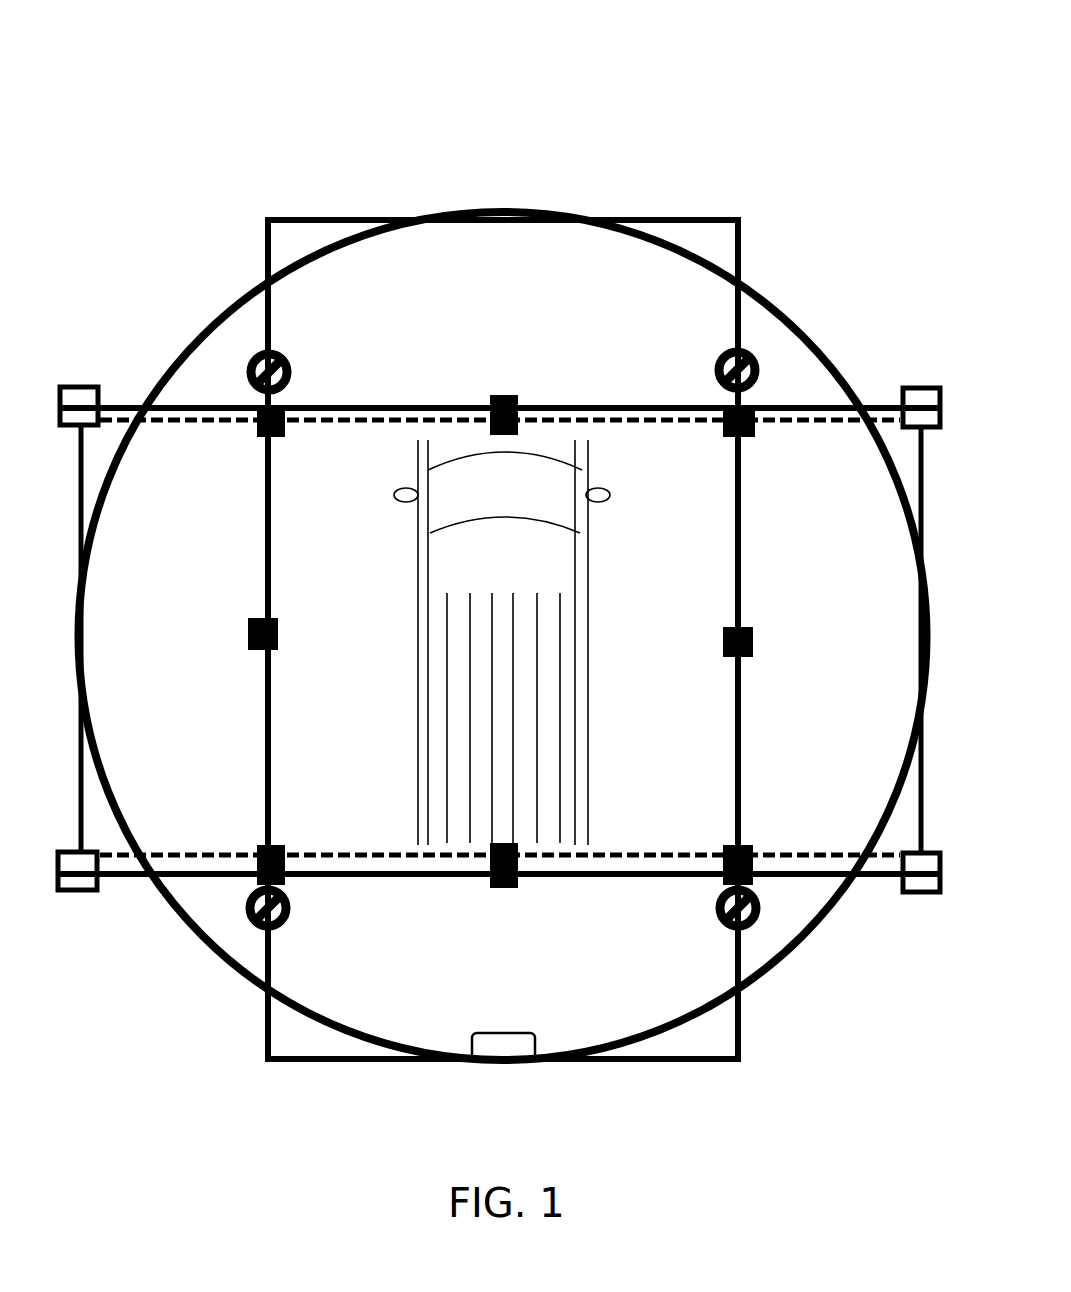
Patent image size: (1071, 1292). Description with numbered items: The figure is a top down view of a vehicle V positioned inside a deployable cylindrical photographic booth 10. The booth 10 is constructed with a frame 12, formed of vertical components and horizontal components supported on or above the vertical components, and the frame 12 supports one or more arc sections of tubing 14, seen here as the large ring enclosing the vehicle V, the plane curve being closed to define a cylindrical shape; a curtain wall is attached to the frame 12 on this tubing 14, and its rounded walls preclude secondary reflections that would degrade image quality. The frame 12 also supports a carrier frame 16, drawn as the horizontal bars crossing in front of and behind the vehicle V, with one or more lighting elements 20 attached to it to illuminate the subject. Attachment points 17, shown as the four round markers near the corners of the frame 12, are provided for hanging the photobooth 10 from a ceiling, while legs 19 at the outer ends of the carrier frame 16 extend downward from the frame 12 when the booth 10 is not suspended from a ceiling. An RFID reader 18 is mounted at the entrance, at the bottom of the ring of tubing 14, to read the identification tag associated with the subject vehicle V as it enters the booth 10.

The deployable cylindrical photographic booth 10 is at (222, 107).
The frame 12 is at (685, 217).
The arc sections of tubing 14 is at (193, 345).
The carrier frame 16 is at (652, 412).
The attachment points 17 is at (263, 347).
The RFID reader 18 is at (530, 1048).
The legs 19 is at (75, 397).
The lighting elements 20 is at (748, 415).
The vehicle V is at (502, 578).